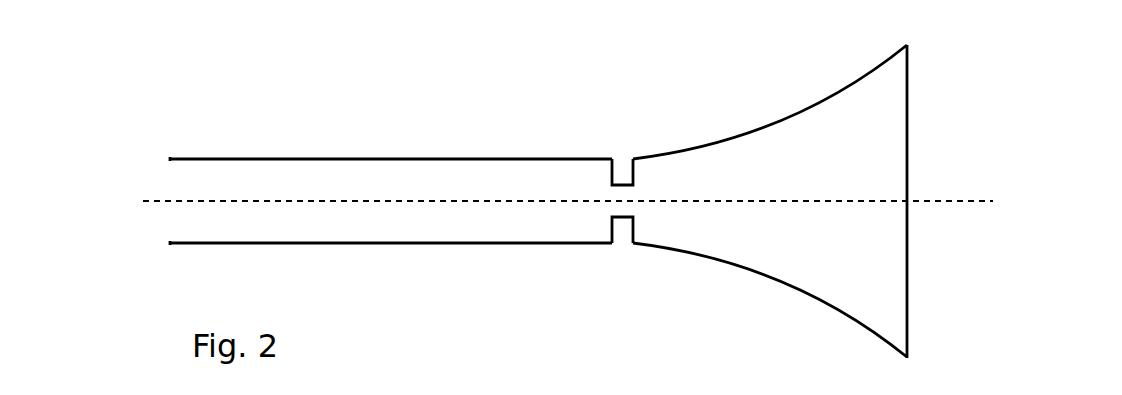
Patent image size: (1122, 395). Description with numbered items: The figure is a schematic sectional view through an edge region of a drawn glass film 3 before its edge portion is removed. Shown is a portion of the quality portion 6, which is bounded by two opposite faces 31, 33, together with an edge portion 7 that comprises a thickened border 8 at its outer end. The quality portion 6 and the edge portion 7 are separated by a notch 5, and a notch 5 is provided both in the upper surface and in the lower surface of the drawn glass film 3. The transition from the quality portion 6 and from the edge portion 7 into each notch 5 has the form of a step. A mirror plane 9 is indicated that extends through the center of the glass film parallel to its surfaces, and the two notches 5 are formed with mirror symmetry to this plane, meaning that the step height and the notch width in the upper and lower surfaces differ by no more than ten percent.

The drawn glass film 3 is at (538, 194).
The notch 5 is at (622, 158).
The quality portion 6 is at (233, 158).
The edge portion 7 is at (733, 140).
The thickened border 8 is at (848, 95).
The mirror plane 9 is at (936, 200).
The face 31 is at (335, 158).
The face 33 is at (325, 243).